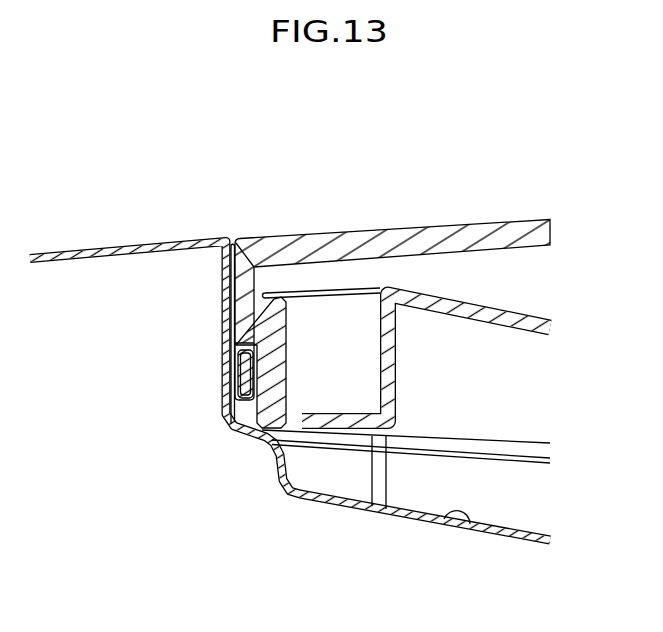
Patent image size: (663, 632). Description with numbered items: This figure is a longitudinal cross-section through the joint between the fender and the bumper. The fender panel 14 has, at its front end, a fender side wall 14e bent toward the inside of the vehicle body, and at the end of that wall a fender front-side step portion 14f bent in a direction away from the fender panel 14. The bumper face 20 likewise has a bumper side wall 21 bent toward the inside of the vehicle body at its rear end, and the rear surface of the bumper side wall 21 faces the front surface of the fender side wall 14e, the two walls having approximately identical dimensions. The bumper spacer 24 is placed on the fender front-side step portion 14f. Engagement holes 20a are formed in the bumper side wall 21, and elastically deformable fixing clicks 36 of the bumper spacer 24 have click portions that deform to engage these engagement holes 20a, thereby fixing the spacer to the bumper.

The fender panel 14 is at (141, 231).
The fender side wall 14e is at (238, 347).
The fender front-side step portion 14f is at (460, 530).
The bumper face 20 is at (430, 221).
The engagement holes 20a is at (237, 312).
The bumper side wall 21 is at (255, 378).
The bumper spacer 24 is at (513, 303).
The fixing clicks 36 is at (232, 315).